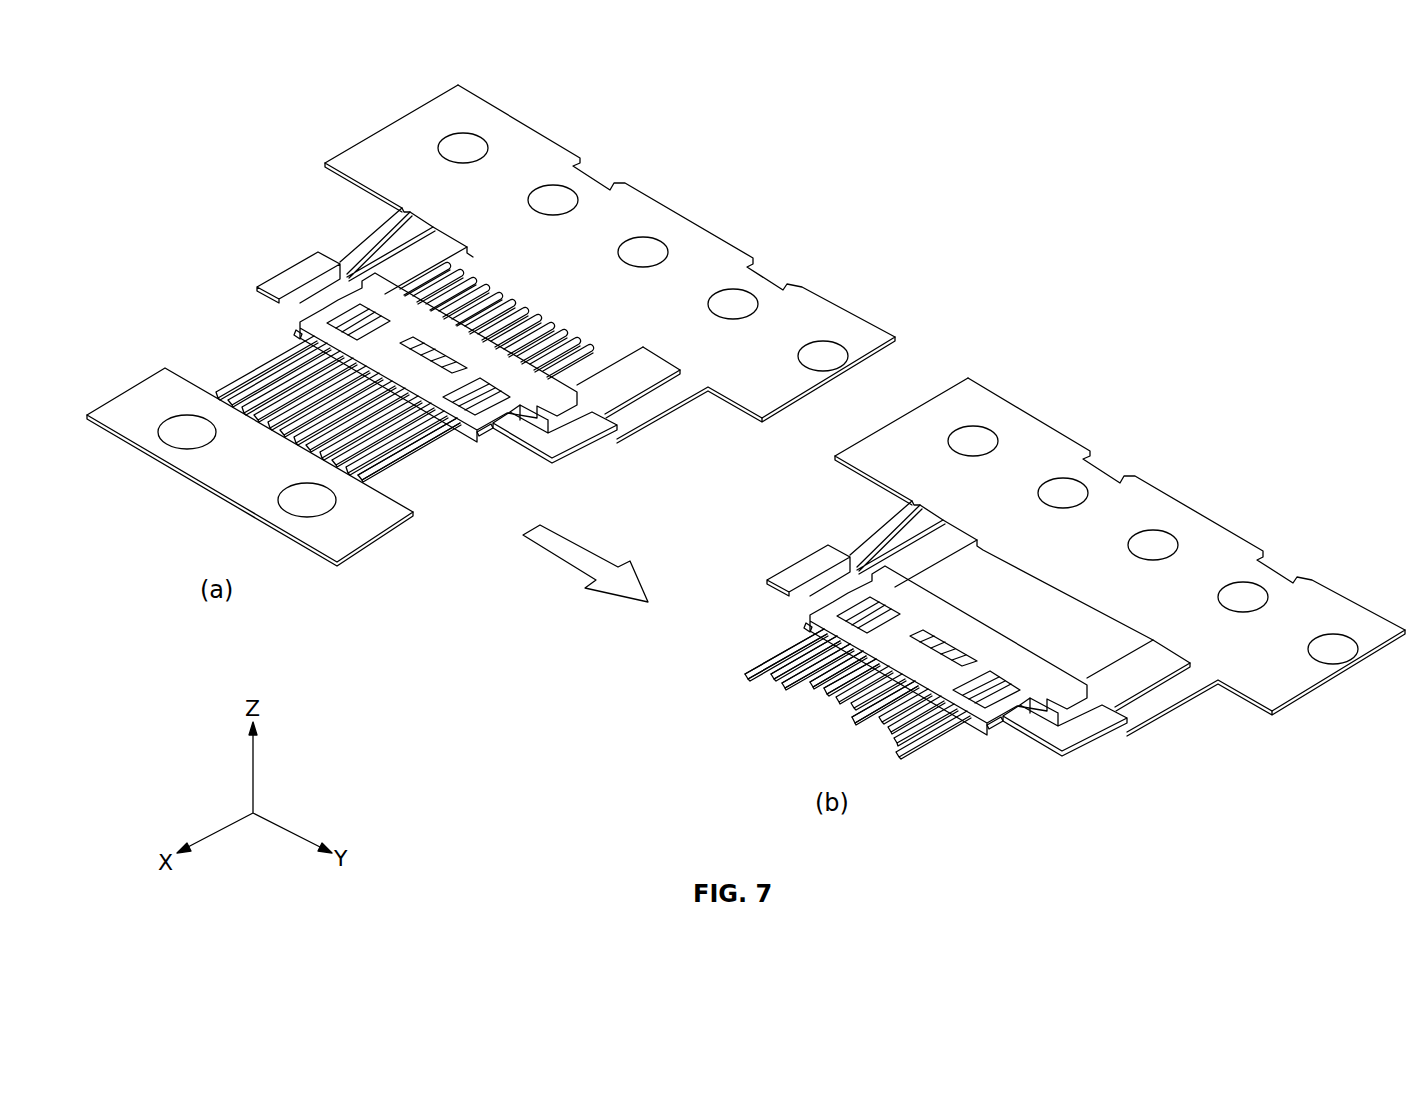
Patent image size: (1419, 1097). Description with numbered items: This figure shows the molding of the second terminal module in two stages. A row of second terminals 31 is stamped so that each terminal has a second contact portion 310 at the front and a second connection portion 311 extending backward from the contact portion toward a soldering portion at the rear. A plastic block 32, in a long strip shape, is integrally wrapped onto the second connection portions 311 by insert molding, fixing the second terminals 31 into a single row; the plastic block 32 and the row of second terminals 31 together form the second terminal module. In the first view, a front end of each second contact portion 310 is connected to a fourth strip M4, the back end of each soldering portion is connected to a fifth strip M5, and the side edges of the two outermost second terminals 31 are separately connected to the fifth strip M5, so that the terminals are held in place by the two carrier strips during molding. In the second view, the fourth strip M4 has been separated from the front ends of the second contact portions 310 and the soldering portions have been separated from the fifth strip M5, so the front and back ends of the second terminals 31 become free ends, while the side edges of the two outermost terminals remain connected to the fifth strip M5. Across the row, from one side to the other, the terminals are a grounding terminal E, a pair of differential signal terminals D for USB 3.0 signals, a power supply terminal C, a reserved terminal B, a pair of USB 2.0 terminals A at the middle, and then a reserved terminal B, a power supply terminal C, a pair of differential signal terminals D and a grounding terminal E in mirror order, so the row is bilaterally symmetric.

The fourth strip M4 is at (350, 533).
The fifth strip M5 is at (828, 318).
The second terminal 31 is at (253, 370).
The second contact portion 310 is at (417, 463).
The second connection portion 311 is at (300, 331).
The plastic block 32 is at (388, 292).
The USB 2.0 terminal A is at (833, 713).
The reserved terminal B is at (817, 710).
The power supply terminal C is at (782, 710).
The differential signal terminal D is at (763, 690).
The grounding terminal E is at (737, 683).